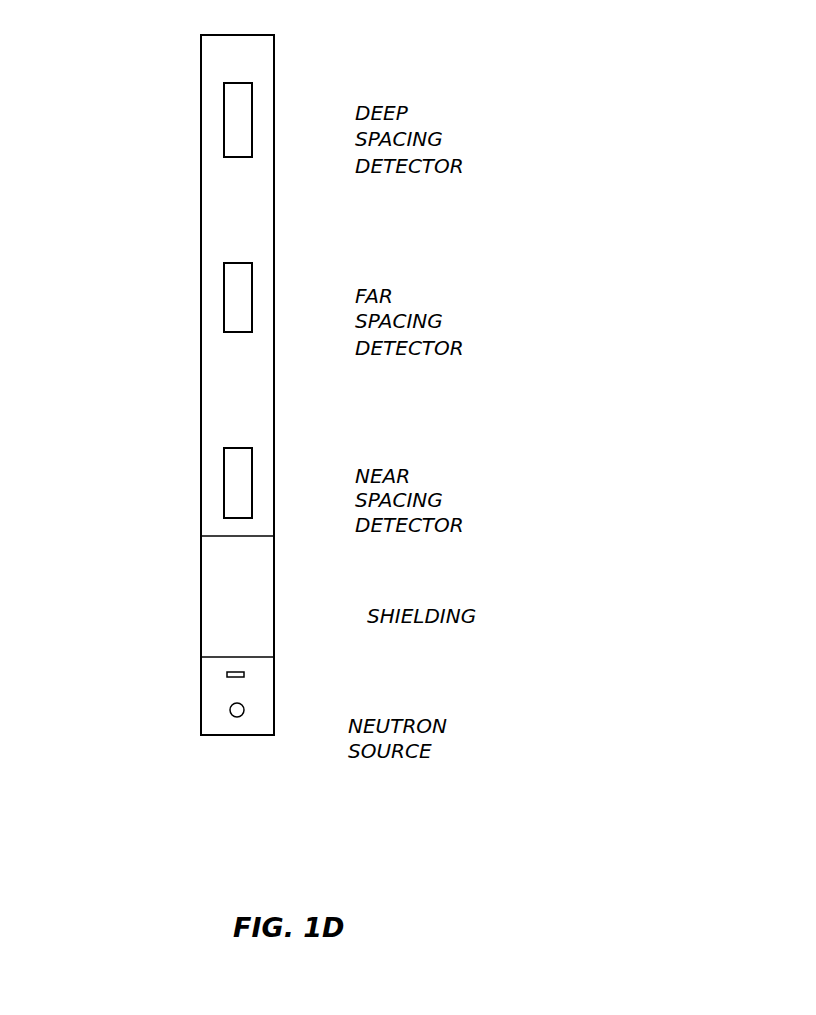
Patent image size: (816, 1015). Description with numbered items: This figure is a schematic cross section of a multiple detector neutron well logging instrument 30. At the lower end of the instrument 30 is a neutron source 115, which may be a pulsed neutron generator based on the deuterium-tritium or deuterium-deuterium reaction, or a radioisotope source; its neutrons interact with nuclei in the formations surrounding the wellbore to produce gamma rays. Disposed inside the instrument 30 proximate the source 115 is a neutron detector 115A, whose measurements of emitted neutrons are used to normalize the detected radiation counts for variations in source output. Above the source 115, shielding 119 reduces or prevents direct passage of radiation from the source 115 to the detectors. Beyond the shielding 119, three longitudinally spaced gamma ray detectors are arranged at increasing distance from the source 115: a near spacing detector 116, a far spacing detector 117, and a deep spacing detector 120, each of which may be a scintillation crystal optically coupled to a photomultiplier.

The instrument 30 is at (166, 202).
The deep spacing detector 120 is at (252, 113).
The far spacing detector 117 is at (252, 293).
The near spacing detector 116 is at (252, 474).
The shielding 119 is at (264, 587).
The neutron source 115 is at (244, 710).
The neutron detector 115A is at (220, 679).